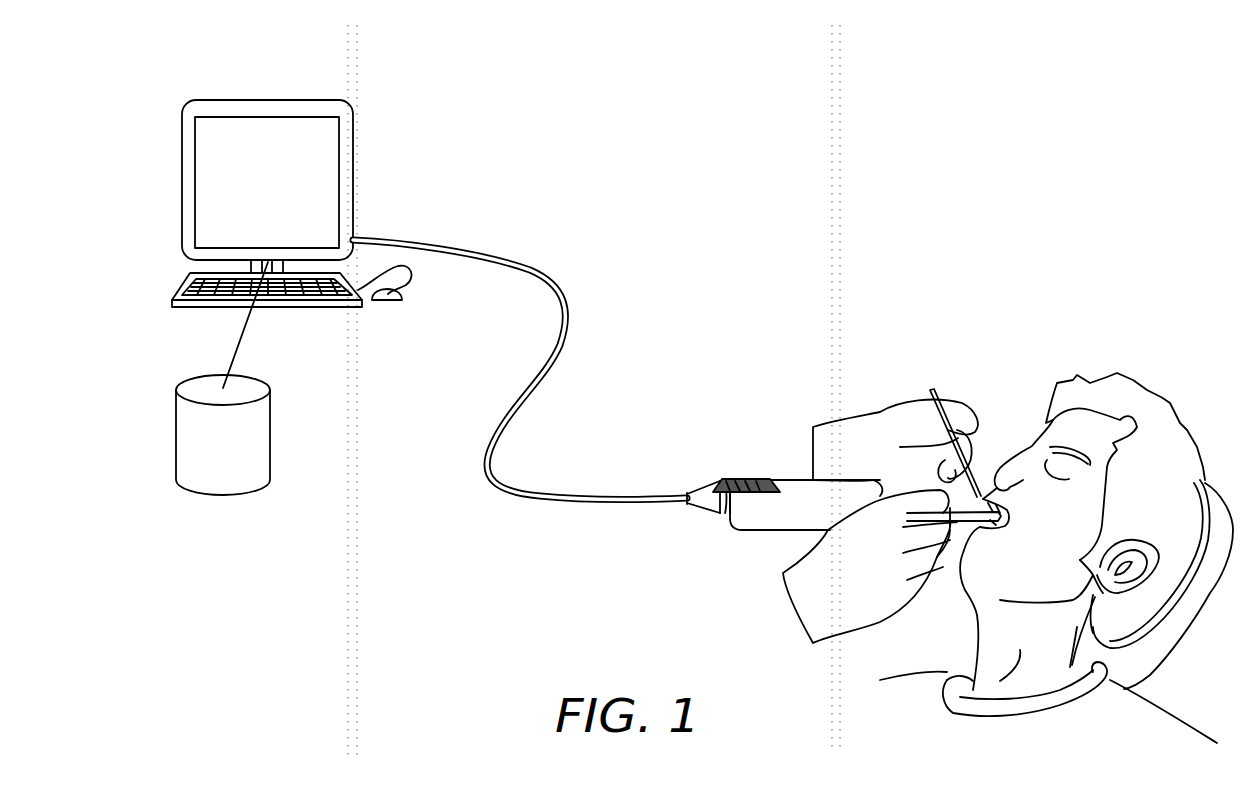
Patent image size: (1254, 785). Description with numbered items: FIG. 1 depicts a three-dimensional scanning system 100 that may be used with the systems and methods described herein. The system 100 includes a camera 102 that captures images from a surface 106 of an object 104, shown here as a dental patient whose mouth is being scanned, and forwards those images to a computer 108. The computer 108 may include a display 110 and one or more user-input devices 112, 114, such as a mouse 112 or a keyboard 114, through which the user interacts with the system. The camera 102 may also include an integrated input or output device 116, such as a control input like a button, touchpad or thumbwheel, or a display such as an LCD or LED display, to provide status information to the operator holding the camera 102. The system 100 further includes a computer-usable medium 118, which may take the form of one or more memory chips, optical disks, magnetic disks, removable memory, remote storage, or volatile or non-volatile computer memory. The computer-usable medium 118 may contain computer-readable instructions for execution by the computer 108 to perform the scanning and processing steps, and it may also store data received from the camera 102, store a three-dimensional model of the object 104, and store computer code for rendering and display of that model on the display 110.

The system 100 is at (877, 237).
The camera 102 is at (958, 525).
The object 104 is at (1040, 428).
The surface 106 is at (1010, 518).
The computer 108 is at (182, 175).
The display 110 is at (283, 100).
The mouse 112 is at (387, 306).
The keyboard 114 is at (178, 298).
The integrated input or output device 116 is at (753, 478).
The computer-usable medium 118 is at (270, 450).